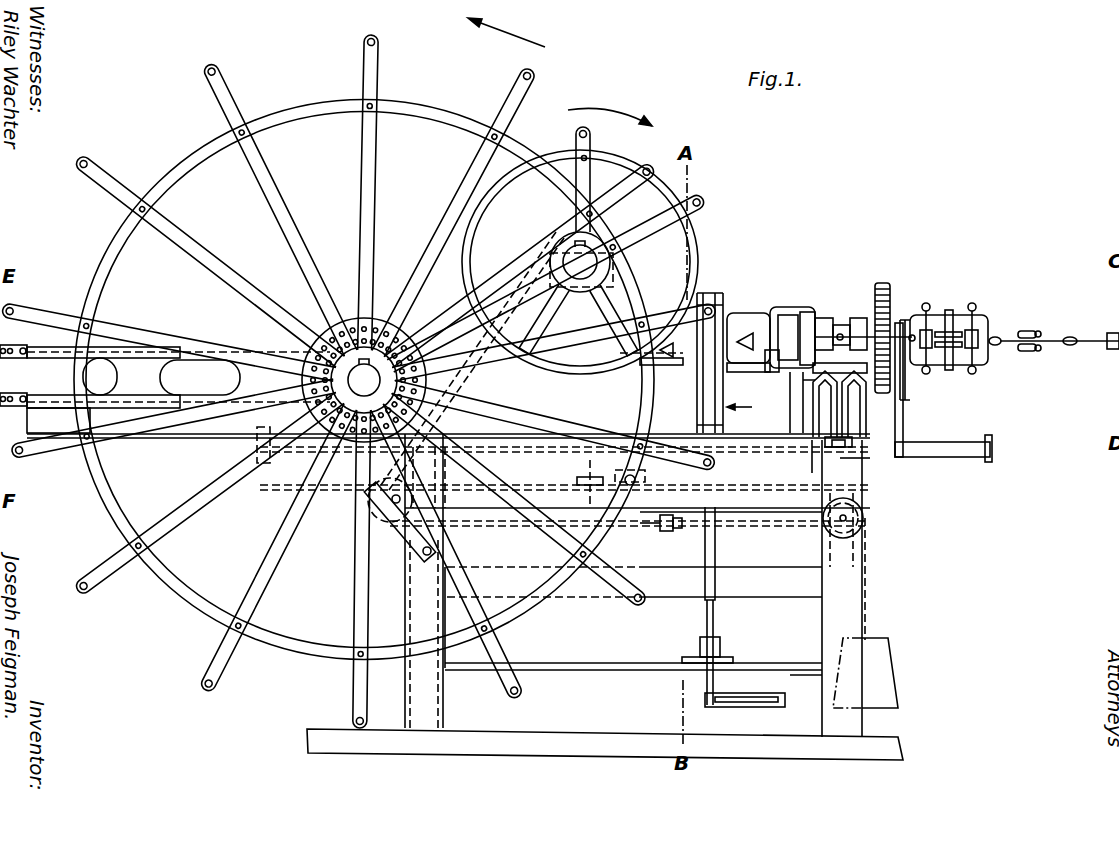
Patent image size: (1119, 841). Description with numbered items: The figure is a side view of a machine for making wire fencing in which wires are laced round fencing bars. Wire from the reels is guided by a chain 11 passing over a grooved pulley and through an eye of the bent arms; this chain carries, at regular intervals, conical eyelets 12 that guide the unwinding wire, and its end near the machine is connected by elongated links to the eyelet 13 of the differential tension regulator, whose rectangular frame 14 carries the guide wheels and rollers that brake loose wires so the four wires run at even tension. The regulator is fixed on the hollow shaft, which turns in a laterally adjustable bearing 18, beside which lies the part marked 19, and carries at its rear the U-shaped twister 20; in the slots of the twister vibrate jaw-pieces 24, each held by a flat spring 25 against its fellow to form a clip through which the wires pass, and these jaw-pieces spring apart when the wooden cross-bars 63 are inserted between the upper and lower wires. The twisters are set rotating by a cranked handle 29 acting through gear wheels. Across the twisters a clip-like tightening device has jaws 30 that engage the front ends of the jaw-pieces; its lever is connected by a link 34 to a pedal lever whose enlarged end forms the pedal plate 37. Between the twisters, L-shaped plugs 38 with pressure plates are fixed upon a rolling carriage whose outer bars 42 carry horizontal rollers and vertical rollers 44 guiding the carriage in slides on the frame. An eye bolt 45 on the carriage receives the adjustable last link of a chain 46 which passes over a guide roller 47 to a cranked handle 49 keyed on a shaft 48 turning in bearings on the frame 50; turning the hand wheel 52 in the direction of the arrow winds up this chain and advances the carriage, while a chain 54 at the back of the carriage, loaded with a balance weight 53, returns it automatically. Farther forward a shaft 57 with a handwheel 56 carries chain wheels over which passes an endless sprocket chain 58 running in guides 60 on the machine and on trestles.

The chain 11 is at (1085, 348).
The conical eyelets 12 is at (1035, 349).
The eyelet 13 is at (992, 348).
The rectangular frame 14 is at (983, 318).
The bearing 18 is at (848, 320).
The pin 19 is at (842, 328).
The twister 20 is at (805, 312).
The jaw-piece 24 is at (735, 307).
The flat spring 25 is at (760, 305).
The cranked handle 29 is at (898, 413).
The jaws 30 is at (725, 370).
The link 34 is at (716, 533).
The pedal plate 37 is at (770, 706).
The plugs 38 is at (772, 372).
The outer bars 42 is at (572, 473).
The vertical rollers 44 is at (622, 475).
The eye bolt 45 is at (660, 528).
The chain 46 is at (488, 530).
The guide roller 47 is at (390, 516).
The shaft 48 is at (592, 262).
The cranked handle 49 is at (580, 262).
The frame 50 is at (465, 595).
The hand wheel 52 is at (555, 153).
The balance weight 53 is at (885, 670).
The chain 54 is at (807, 496).
The handwheel 56 is at (287, 114).
The shaft 57 is at (340, 378).
The endless sprocket chain 58 is at (126, 377).
The guides 60 is at (47, 358).
The cross-bars 63 is at (715, 338).